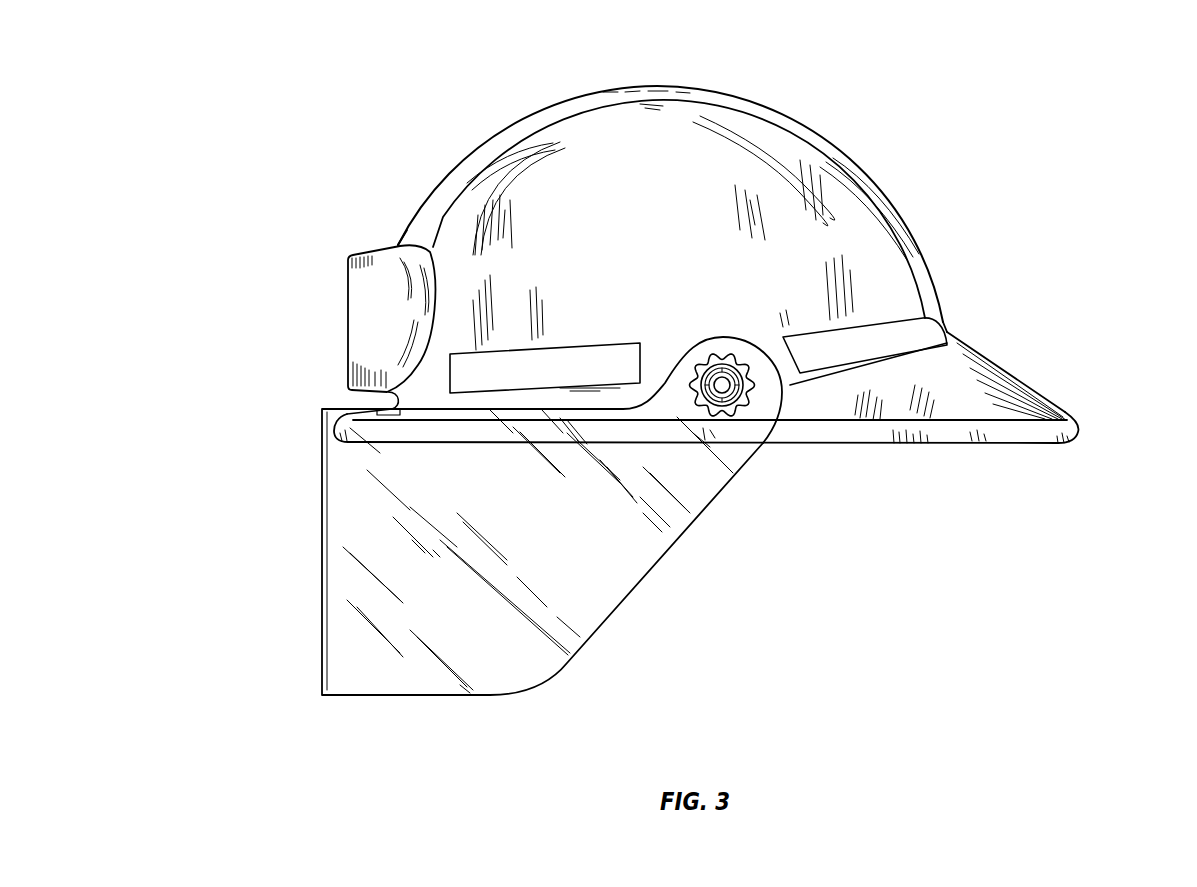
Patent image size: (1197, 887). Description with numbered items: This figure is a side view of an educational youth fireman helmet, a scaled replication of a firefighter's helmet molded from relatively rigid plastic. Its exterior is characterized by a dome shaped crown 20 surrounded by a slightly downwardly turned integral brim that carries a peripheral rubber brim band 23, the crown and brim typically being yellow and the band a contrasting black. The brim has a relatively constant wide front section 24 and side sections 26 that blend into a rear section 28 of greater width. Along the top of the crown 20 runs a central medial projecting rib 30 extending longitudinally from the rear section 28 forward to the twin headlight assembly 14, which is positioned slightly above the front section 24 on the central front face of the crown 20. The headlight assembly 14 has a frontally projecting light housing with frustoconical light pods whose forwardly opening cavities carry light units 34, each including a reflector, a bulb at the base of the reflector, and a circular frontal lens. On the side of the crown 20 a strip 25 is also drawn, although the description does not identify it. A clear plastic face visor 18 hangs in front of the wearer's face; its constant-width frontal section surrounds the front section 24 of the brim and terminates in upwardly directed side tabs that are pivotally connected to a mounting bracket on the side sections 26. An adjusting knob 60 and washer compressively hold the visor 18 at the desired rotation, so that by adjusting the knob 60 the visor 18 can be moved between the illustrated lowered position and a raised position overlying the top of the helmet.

The twin headlight assembly 14 is at (307, 249).
The clear face visor 18 is at (322, 537).
The dome shaped crown 20 is at (795, 140).
The peripheral rubber brim band 23 is at (1060, 430).
The front section 24 is at (385, 398).
The reflective strip 25 is at (877, 325).
The side sections 26 is at (870, 398).
The rear section 28 is at (1000, 370).
The central medial projecting rib 30 is at (508, 125).
The light unit 34 is at (348, 288).
The adjusting knob 60 is at (740, 408).